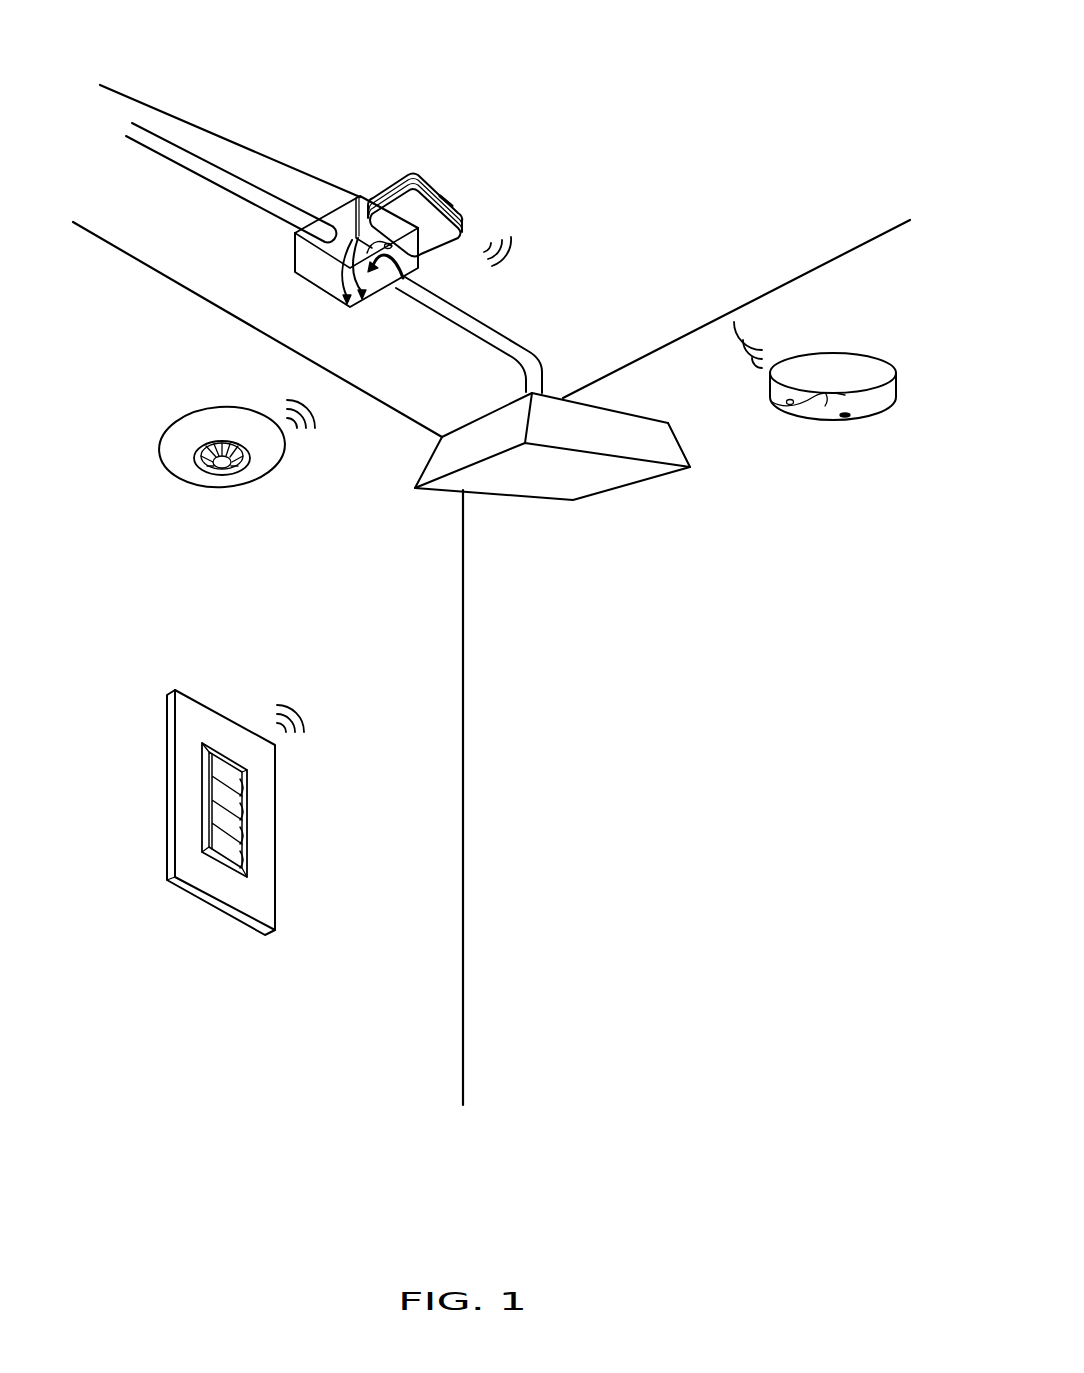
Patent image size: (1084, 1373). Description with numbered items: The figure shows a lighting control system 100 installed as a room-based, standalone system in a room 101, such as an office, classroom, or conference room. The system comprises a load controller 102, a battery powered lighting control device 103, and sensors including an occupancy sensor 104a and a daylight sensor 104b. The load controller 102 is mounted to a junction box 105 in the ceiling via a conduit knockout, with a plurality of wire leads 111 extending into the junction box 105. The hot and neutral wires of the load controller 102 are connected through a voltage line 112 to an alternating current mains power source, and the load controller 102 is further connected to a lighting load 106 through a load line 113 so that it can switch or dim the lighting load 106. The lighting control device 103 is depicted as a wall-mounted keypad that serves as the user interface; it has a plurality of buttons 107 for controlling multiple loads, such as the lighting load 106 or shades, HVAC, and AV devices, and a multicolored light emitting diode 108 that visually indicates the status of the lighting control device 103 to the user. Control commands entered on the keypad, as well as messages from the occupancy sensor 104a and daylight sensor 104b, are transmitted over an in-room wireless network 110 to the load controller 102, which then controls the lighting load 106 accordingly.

The lighting control system 100 is at (852, 30).
The room 101 is at (876, 693).
The load controller 102 is at (465, 210).
The lighting control device 103 is at (265, 790).
The occupancy sensor 104a is at (160, 434).
The daylight sensor 104b is at (835, 423).
The junction box 105 is at (298, 247).
The lighting load 106 is at (593, 495).
The buttons 107 is at (217, 767).
The multicolored light emitting diode 108 is at (247, 862).
The in-room wireless network 110 is at (370, 621).
The wire leads 111 is at (356, 200).
The voltage line 112 is at (245, 173).
The load line 113 is at (530, 348).